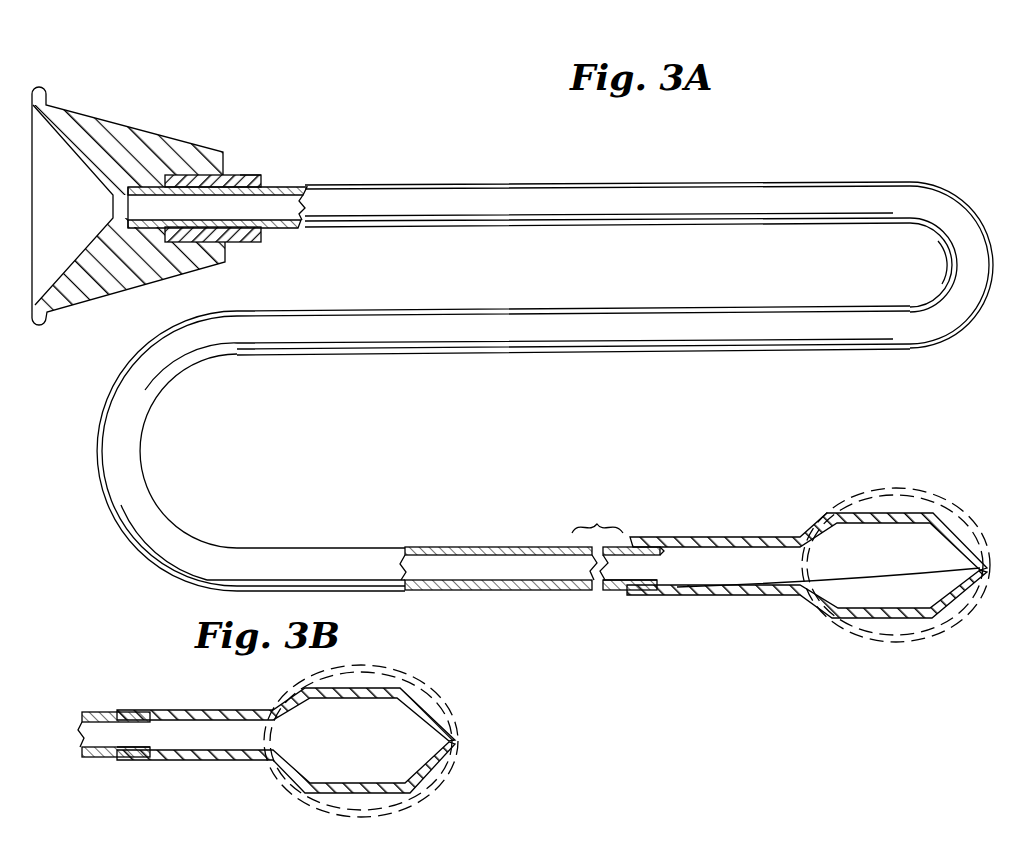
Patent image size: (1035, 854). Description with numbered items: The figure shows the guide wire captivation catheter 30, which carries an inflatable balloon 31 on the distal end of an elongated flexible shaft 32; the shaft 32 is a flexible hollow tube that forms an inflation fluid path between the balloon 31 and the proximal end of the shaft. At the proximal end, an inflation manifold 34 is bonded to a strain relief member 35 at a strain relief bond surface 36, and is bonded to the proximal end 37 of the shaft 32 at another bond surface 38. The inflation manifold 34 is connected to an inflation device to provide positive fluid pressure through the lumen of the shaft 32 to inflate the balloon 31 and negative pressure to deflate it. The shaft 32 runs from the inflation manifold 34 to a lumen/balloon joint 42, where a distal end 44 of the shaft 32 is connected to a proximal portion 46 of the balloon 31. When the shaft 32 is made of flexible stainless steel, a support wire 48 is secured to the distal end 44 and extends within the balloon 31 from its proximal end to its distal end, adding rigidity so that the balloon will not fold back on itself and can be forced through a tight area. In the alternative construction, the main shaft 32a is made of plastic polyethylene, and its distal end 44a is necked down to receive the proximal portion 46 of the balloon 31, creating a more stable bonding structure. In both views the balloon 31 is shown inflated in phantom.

In FIG. 3A, the guide wire captivation catheter 30 is at (975, 290).
In FIG. 3A, the inflatable balloon 31 is at (907, 513).
In FIG. 3B, the inflatable balloon 31 is at (435, 710).
In FIG. 3A, the shaft 32 is at (558, 182).
In FIG. 3B, the main shaft 32a is at (100, 712).
In FIG. 3A, the inflation manifold 34 is at (120, 120).
In FIG. 3A, the strain relief member 35 is at (240, 172).
In FIG. 3A, the strain relief bond surface 36 is at (163, 173).
In FIG. 3A, the proximal end of the shaft 37 is at (292, 184).
In FIG. 3A, the bond surface 38 is at (283, 224).
In FIG. 3A, the lumen/balloon joint 42 is at (705, 537).
In FIG. 3B, the lumen/balloon joint 42 is at (130, 710).
In FIG. 3A, the distal end of the shaft 44 is at (674, 578).
In FIG. 3B, the distal end of the shaft 44a is at (165, 736).
In FIG. 3A, the proximal portion of the balloon 46 is at (753, 596).
In FIG. 3B, the proximal portion of the balloon 46 is at (222, 763).
In FIG. 3A, the support wire 48 is at (882, 572).